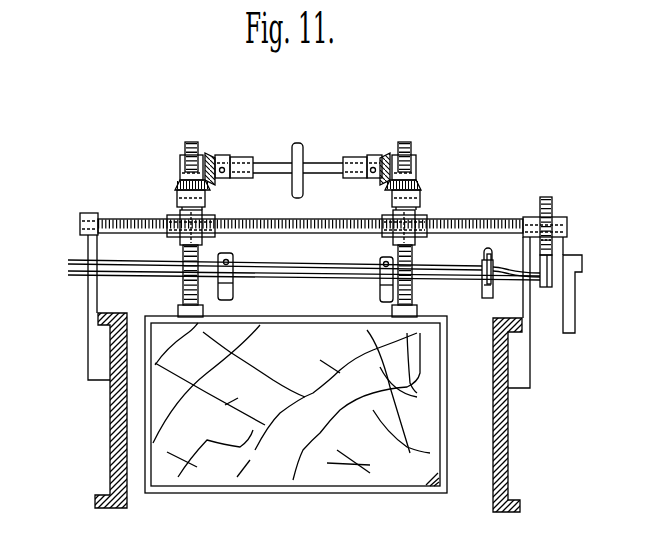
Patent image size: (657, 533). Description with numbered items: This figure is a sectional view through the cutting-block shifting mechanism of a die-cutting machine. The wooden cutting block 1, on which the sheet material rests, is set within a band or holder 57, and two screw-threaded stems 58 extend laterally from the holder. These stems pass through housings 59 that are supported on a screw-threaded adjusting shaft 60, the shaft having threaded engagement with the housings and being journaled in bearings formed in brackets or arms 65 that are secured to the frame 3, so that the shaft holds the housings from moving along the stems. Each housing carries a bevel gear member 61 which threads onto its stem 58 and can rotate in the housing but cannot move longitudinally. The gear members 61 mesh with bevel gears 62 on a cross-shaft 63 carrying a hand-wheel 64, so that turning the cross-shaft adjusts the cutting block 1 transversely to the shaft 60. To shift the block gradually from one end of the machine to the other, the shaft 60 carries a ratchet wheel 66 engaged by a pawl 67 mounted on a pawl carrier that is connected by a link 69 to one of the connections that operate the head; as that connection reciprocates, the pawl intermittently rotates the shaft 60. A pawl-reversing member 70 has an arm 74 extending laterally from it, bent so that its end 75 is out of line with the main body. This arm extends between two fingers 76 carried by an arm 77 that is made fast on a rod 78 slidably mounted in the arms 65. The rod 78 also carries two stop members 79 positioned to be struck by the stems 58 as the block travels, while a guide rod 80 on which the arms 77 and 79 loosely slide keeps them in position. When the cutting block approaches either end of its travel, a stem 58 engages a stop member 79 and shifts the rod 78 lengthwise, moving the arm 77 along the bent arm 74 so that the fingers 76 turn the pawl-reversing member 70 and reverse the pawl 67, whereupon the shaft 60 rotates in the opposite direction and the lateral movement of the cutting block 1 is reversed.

The cutting block 1 is at (273, 470).
The frame 3 is at (110, 422).
The band or holder 57 is at (387, 490).
The screw-threaded stems 58 is at (183, 255).
The housings 59 is at (190, 203).
The screw-threaded adjusting shaft 60 is at (340, 222).
The bevel gear members 61 is at (185, 183).
The bevel gears 62 is at (213, 158).
The cross-shaft 63 is at (272, 162).
The hand-wheel 64 is at (299, 144).
The brackets or arms 65 is at (90, 250).
The ratchet wheel 66 is at (552, 198).
The pawl 67 is at (548, 240).
The link 69 is at (576, 315).
The pawl-reversing member 70 is at (544, 287).
The arm 74 is at (522, 276).
The end of arm 75 is at (483, 266).
The fingers 76 is at (487, 278).
The arm 77 is at (489, 302).
The rod 78 is at (310, 263).
The stop members 79 is at (228, 283).
The guide rod 80 is at (322, 278).